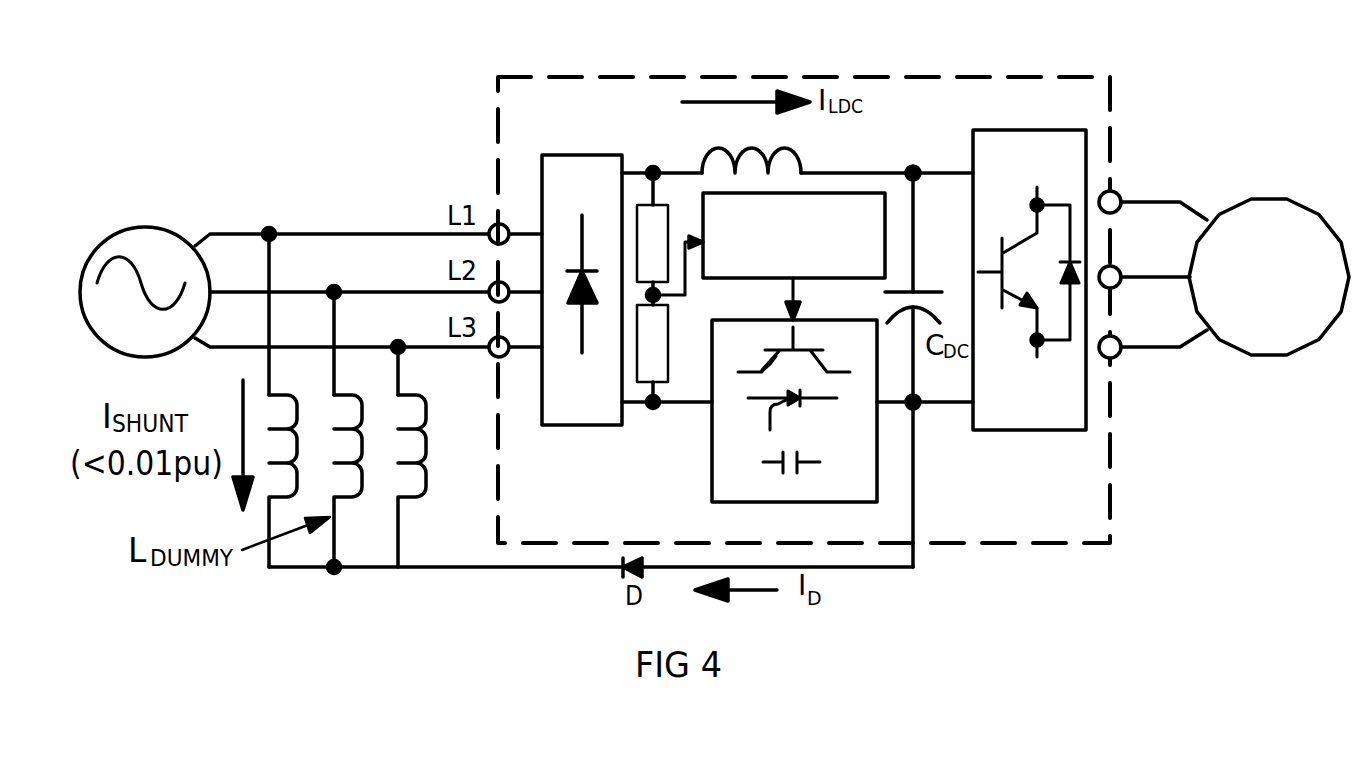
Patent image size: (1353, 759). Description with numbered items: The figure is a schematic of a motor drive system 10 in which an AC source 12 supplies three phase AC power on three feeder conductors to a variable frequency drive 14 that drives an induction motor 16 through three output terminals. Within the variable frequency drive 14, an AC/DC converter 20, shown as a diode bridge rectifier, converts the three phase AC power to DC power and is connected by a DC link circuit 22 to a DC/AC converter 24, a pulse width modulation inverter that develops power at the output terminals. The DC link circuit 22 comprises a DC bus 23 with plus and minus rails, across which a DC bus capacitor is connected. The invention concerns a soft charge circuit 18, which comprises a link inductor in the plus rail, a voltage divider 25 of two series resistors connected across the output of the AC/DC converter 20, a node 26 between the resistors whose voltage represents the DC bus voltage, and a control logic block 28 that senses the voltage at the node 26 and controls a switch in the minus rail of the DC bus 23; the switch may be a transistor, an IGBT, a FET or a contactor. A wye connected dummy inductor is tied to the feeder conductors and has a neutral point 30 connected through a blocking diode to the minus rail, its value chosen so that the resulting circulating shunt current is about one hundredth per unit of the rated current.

The motor drive system 10 is at (1163, 102).
The AC source 12 is at (181, 200).
The variable frequency drive 14 is at (1043, 64).
The induction motor 16 is at (1306, 174).
The soft charge circuit 18 is at (666, 453).
The AC/DC converter 20 is at (601, 138).
The DC link circuit 22 is at (844, 140).
The DC bus 23 is at (895, 161).
The DC/AC converter 24 is at (1020, 116).
The voltage divider 25 is at (695, 305).
The node 26 is at (627, 312).
The control logic block 28 is at (825, 278).
The neutral point 30 is at (360, 585).